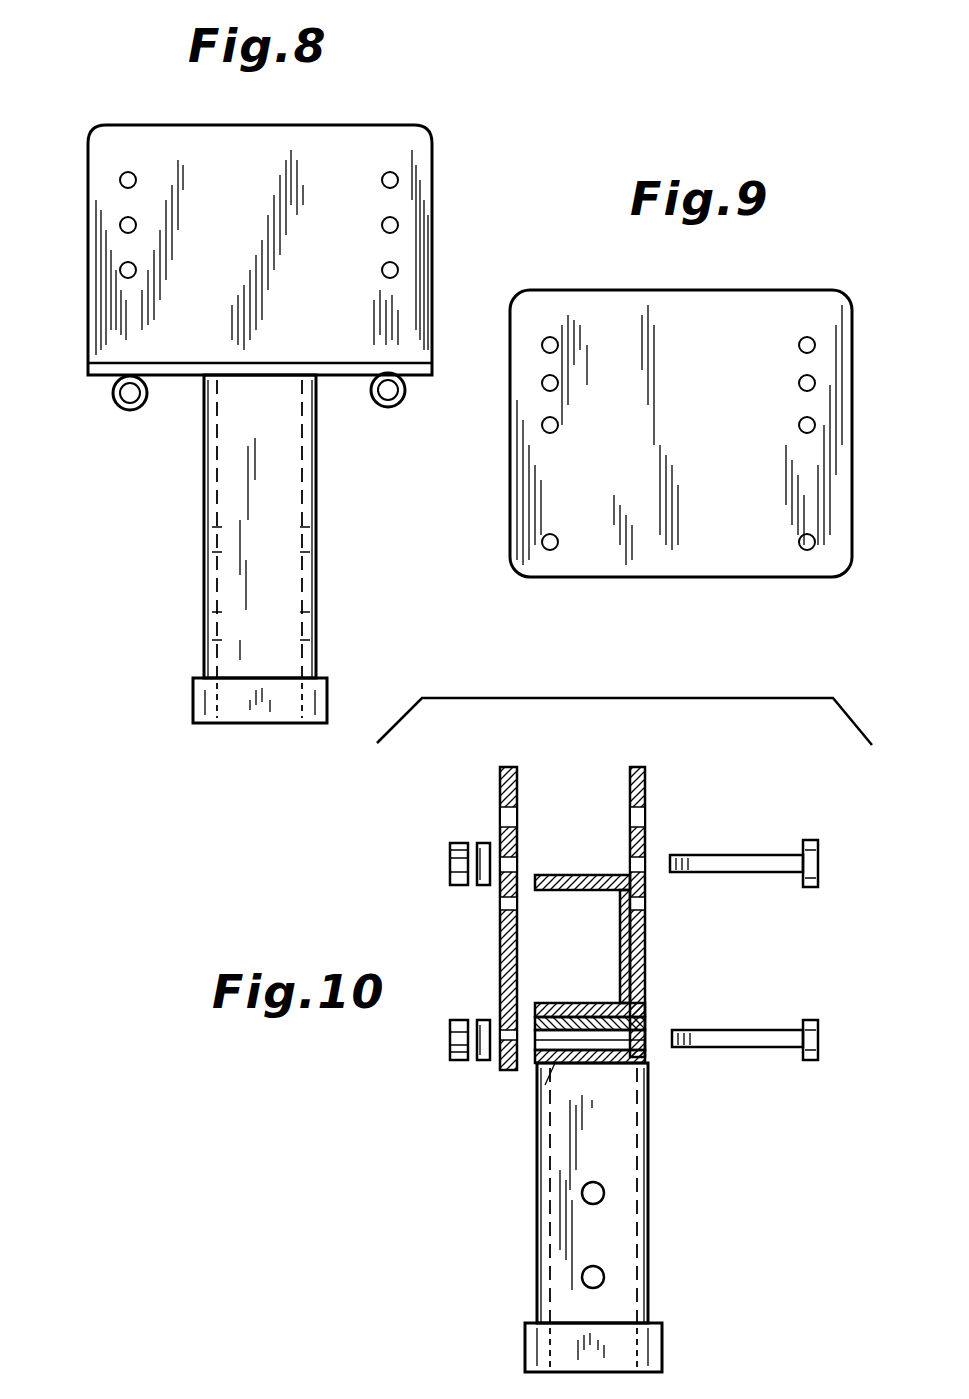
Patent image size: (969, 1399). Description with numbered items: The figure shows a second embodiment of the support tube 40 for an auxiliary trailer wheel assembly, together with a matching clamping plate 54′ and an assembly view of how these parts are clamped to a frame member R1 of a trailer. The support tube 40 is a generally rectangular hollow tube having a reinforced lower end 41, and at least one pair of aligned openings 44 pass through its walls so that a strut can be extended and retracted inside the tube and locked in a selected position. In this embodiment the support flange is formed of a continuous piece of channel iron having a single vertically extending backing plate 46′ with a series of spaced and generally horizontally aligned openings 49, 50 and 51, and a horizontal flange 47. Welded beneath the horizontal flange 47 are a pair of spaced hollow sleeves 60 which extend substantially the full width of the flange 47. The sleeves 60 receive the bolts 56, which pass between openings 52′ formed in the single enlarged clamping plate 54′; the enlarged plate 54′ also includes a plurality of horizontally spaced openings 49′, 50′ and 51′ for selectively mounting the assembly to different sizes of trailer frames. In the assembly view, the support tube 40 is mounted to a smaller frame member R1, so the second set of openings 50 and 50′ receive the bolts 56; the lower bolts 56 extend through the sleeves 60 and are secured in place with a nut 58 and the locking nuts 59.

In FIG. 8, the support tube 40 is at (190, 514).
In FIG. 10, the support tube 40 is at (526, 1211).
In FIG. 10, the reinforced lower end 41 is at (662, 1340).
In FIG. 8, the aligned openings 44 is at (314, 538).
In FIG. 10, the aligned openings 44 is at (604, 1200).
In FIG. 8, the backing plate 46′ is at (372, 100).
In FIG. 10, the backing plate 46′ is at (645, 960).
In FIG. 8, the horizontal flange 47 is at (305, 363).
In FIG. 8, the opening 49 is at (120, 180).
In FIG. 10, the opening 49 is at (645, 820).
In FIG. 8, the opening 50 is at (120, 225).
In FIG. 10, the opening 50 is at (645, 862).
In FIG. 8, the opening 51 is at (120, 270).
In FIG. 10, the opening 51 is at (645, 905).
In FIG. 9, the opening 49′ is at (558, 346).
In FIG. 10, the opening 49′ is at (517, 812).
In FIG. 9, the opening 50′ is at (558, 383).
In FIG. 10, the opening 50′ is at (517, 862).
In FIG. 9, the opening 51′ is at (558, 425).
In FIG. 10, the opening 51′ is at (500, 905).
In FIG. 9, the openings 52′ is at (542, 543).
In FIG. 9, the clamping plate 54′ is at (772, 303).
In FIG. 10, the clamping plate 54′ is at (508, 918).
In FIG. 10, the bolts 56 is at (728, 872).
In FIG. 10, the nut 58 is at (450, 858).
In FIG. 10, the locking nuts 59 is at (483, 843).
In FIG. 8, the hollow sleeves 60 is at (112, 396).
In FIG. 10, the hollow sleeves 60 is at (560, 1065).
In FIG. 10, the frame member R1 is at (620, 932).